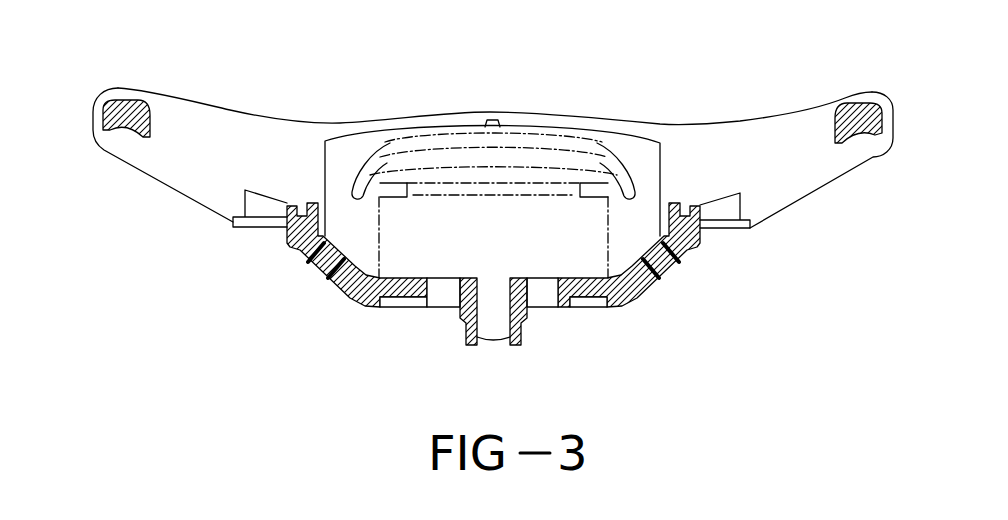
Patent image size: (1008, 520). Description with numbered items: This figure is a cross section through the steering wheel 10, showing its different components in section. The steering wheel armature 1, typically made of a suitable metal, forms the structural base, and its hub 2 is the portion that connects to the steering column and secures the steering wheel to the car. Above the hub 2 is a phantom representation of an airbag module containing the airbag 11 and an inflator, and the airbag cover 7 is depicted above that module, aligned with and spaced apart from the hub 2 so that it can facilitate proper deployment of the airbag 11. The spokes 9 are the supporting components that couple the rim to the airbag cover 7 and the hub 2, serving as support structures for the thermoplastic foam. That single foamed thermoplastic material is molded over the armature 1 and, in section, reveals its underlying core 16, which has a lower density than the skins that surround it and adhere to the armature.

The steering wheel armature 1 is at (128, 108).
The hub 2 is at (473, 322).
The airbag cover 7 is at (327, 121).
The spokes 9 is at (748, 123).
The steering wheel 10 is at (778, 267).
The airbag 11 is at (438, 188).
The underlying core 16 is at (187, 165).